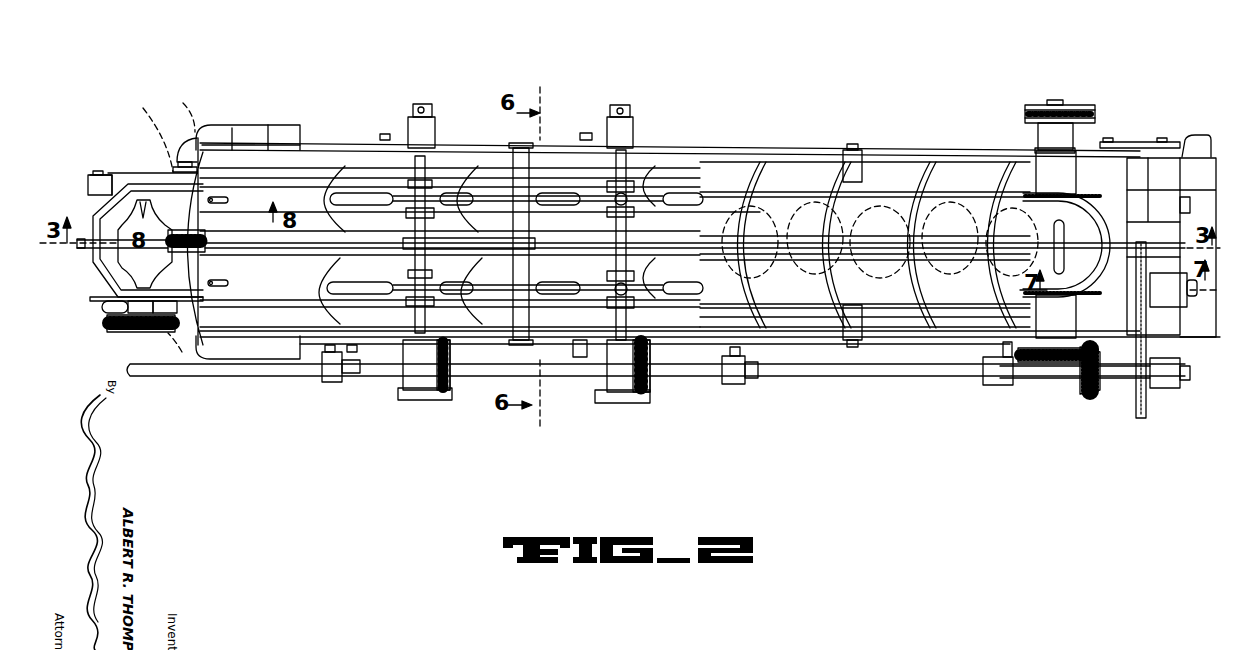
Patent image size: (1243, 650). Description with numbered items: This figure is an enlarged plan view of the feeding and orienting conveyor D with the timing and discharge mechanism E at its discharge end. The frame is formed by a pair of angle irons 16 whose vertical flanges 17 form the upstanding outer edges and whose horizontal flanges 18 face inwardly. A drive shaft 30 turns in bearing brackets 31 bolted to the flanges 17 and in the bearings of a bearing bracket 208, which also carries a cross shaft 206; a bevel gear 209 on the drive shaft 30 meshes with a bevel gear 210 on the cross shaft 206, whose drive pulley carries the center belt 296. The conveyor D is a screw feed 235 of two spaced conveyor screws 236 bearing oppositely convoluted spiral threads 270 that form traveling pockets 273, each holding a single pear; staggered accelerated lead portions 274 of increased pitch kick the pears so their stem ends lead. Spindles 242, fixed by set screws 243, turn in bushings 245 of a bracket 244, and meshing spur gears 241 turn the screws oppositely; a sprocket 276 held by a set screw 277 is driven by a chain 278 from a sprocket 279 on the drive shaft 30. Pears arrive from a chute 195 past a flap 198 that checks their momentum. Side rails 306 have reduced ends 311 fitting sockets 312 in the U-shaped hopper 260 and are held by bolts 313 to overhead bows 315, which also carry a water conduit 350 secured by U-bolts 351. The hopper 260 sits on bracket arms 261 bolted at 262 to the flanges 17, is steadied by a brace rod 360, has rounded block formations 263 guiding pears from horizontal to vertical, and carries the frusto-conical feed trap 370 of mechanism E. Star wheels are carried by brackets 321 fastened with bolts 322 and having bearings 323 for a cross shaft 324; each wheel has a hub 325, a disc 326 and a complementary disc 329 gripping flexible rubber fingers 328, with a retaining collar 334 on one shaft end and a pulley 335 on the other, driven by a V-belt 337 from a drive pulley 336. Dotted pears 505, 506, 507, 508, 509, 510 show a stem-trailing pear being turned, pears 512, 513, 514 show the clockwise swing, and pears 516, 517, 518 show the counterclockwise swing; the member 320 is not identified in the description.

The angle irons 16 is at (1203, 187).
The flanges 17 is at (1200, 165).
The flanges 18 is at (1190, 200).
The drive shaft 30 is at (185, 376).
The bearing brackets 31 is at (330, 380).
The discharge chute 195 is at (1082, 192).
The flap 198 is at (1068, 214).
The cross shaft 206 is at (1056, 100).
The bearing bracket 208 is at (990, 388).
The bevel gear 209 is at (1083, 392).
The bevel gear 210 is at (1055, 364).
The screw feed 235 is at (695, 228).
The conveyor screws 236 is at (958, 190).
The spur gear 241 is at (1117, 160).
The spindle 242 is at (1183, 190).
The set screws 243 is at (226, 203).
The bracket 244 is at (1187, 340).
The bushings 245 is at (1160, 202).
The U-shaped hopper 260 is at (140, 184).
The bracket arms 261 is at (238, 148).
The bolts 262 is at (283, 150).
The rounded block formations 263 is at (196, 216).
The spirally trending thread 270 is at (748, 180).
The pockets 273 is at (733, 210).
The accelerated lead portions 274 is at (925, 352).
The sprocket 276 is at (1140, 262).
The set screw 277 is at (1128, 300).
The chain 278 is at (1140, 395).
The sprocket 279 is at (1143, 392).
The center belt 296 is at (322, 243).
The side rail 306 is at (296, 170).
The ends 311 is at (186, 110).
The sockets 312 is at (192, 125).
The bolts 313 is at (515, 150).
The overhead bows 315 is at (520, 175).
The rail 320 is at (365, 175).
The brackets 321 is at (398, 133).
The bolts 322 is at (380, 137).
The bearings 323 is at (427, 130).
The cross shaft 324 is at (422, 103).
The hub 325 is at (610, 308).
The disc portion 326 is at (400, 306).
The flexible rubber fingers 328 is at (672, 195).
The complementary disc 329 is at (637, 204).
The retaining collar 334 is at (432, 127).
The pulley 335 is at (437, 403).
The drive pulley 336 is at (453, 390).
The V-belt 337 is at (450, 363).
The conduit 350 is at (445, 248).
The U-bolts 351 is at (522, 250).
The brace rod 360 is at (100, 212).
The feed trap 370 is at (136, 261).
The pear 505 is at (985, 195).
The pear 506 is at (1008, 200).
The pear 507 is at (945, 190).
The pear 508 is at (947, 325).
The pear 509 is at (900, 185).
The pear 510 is at (893, 180).
The pear 512 is at (889, 305).
The pear 513 is at (810, 290).
The pear 514 is at (805, 268).
The pear 516 is at (790, 190).
The helix coil 517 is at (765, 190).
The pear 518 is at (705, 273).
The feeding and orienting conveyor D is at (689, 188).
The timing and discharge mechanism E is at (124, 278).